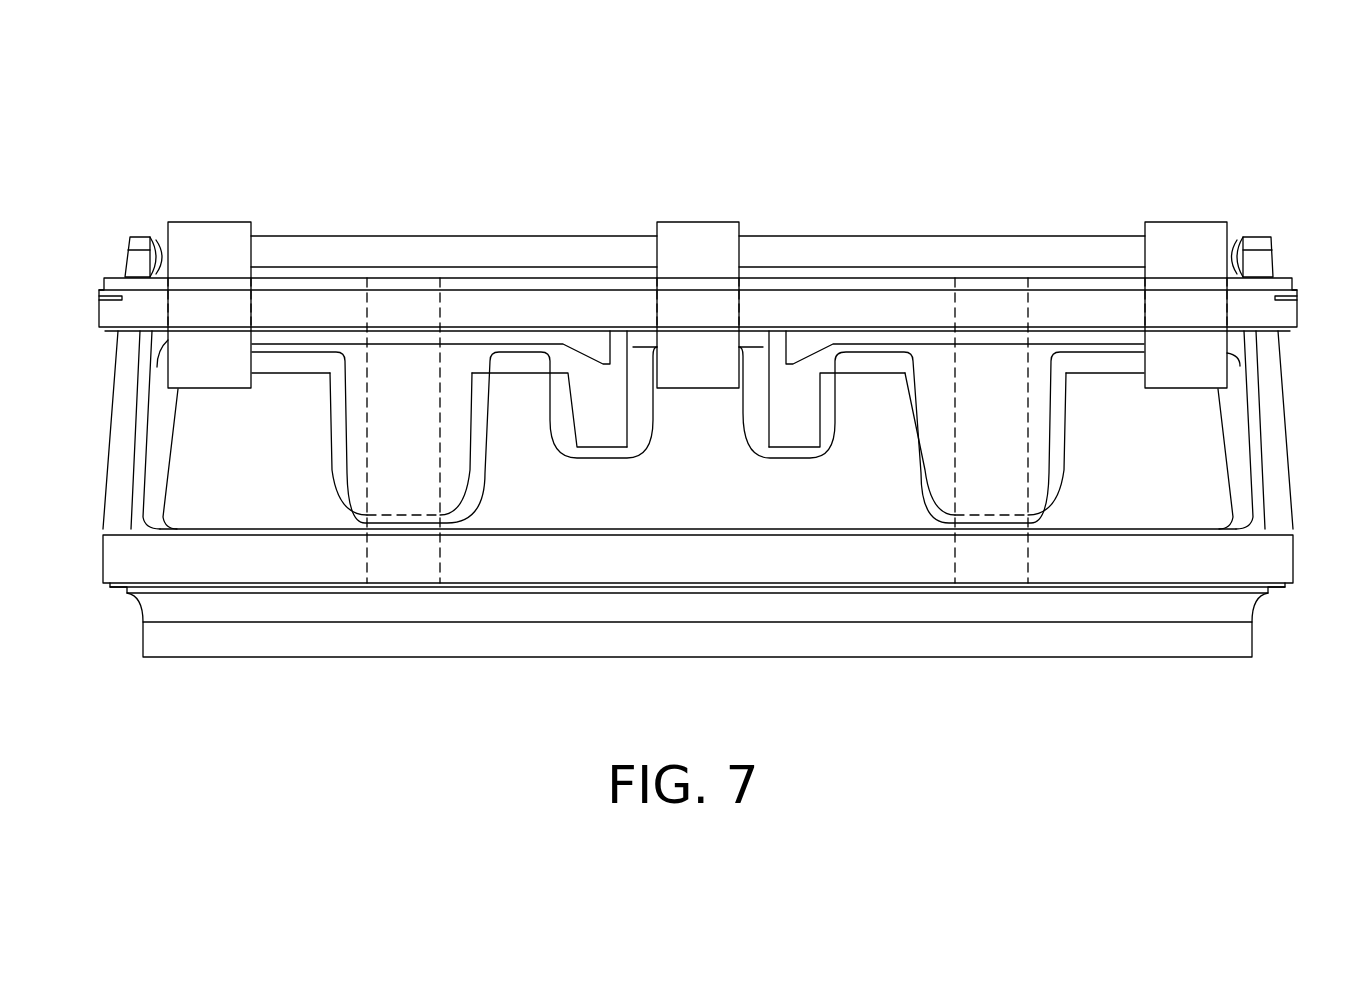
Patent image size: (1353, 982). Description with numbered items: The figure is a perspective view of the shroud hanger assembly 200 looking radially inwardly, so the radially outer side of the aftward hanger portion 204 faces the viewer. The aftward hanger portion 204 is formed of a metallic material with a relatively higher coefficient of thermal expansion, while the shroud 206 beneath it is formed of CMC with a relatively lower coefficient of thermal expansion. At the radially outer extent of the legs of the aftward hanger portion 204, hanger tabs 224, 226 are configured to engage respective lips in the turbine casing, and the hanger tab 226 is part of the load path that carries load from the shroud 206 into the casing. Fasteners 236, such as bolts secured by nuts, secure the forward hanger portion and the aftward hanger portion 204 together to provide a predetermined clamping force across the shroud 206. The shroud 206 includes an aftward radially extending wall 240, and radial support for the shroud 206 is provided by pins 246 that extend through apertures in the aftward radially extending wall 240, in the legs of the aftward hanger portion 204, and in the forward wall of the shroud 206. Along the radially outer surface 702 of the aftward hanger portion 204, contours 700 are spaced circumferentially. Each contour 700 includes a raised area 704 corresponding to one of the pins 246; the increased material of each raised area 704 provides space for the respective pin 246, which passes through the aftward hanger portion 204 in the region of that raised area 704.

The shroud hanger assembly 200 is at (941, 131).
The aftward hanger portion 204 is at (1238, 505).
The shroud 206 is at (1000, 640).
The hanger tab 224 is at (107, 317).
The hanger tab 226 is at (132, 560).
The fastener 236 is at (209, 242).
The aftward radially extending wall 240 is at (465, 608).
The pin 246 is at (402, 563).
The contour 700 is at (296, 464).
The radially outer surface 702 is at (715, 490).
The raised area 704 is at (452, 447).